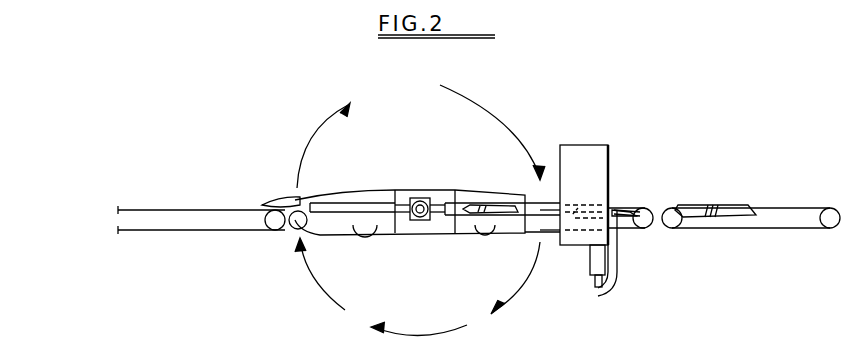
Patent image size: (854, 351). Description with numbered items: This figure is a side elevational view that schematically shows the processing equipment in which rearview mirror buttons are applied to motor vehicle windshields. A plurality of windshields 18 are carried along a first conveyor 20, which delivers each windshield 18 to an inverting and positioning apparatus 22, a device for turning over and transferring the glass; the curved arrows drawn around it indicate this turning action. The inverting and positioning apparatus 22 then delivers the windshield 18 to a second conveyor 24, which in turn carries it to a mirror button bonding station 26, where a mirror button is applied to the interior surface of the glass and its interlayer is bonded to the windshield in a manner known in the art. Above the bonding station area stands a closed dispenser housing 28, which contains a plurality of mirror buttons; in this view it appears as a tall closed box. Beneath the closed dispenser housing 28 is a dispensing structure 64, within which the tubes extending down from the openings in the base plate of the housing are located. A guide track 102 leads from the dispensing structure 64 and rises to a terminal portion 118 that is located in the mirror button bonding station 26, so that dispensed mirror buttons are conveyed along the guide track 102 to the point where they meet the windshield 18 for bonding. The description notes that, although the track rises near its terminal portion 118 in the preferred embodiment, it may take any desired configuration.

The windshields 18 is at (273, 202).
The first conveyor 20 is at (182, 210).
The inverting and positioning apparatus 22 is at (419, 240).
The second conveyor 24 is at (538, 222).
The mirror button bonding station 26 is at (622, 196).
The closed dispenser housing 28 is at (594, 142).
The dispensing structure 64 is at (585, 255).
The guide track 102 is at (620, 278).
The terminal portion 118 is at (622, 216).